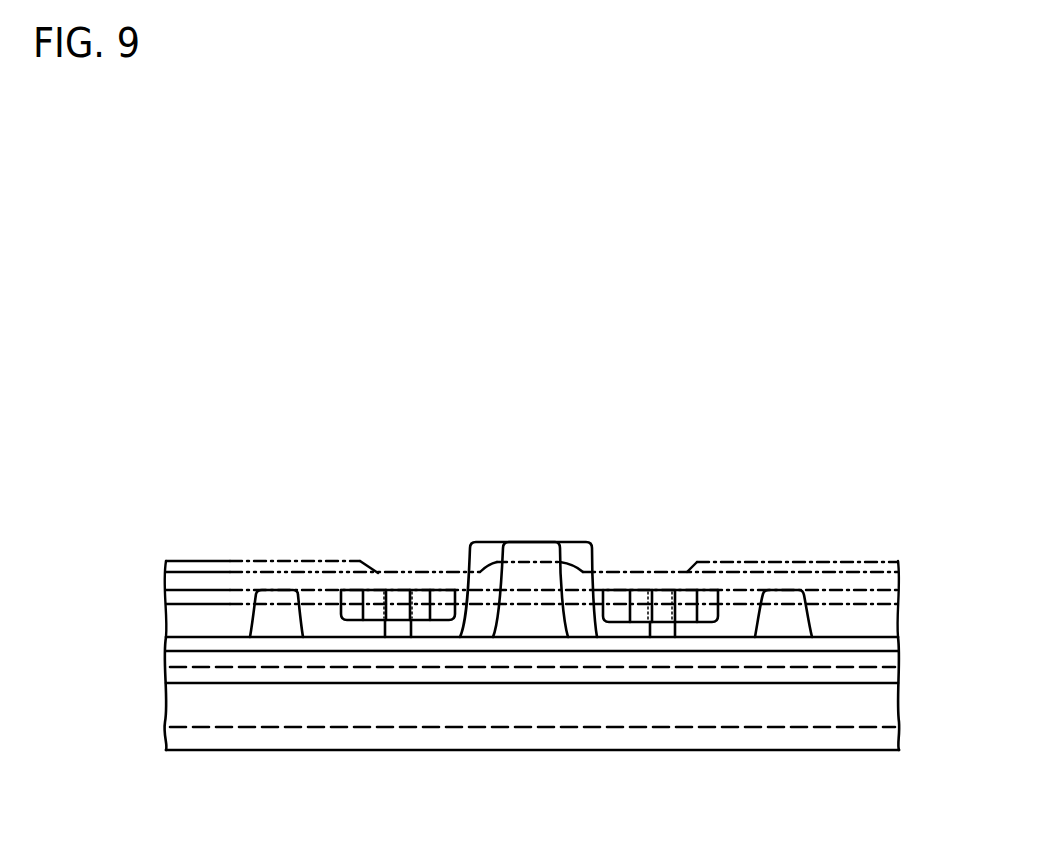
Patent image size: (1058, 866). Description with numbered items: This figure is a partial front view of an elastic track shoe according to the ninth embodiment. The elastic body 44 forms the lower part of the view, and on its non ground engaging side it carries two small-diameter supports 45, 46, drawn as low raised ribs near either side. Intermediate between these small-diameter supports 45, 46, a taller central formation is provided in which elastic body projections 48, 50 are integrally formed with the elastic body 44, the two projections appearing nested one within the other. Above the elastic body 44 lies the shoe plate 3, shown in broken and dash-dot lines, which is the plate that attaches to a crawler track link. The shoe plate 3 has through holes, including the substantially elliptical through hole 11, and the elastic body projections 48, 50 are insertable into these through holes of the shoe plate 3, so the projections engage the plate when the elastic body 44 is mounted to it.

The shoe plate 3 is at (853, 567).
The substantially elliptical through hole 11 is at (597, 585).
The elastic body 44 is at (603, 740).
The small-diameter support 45 is at (285, 596).
The small-diameter support 46 is at (783, 605).
The elastic body projection 48 is at (533, 542).
The elastic body projection 50 is at (493, 542).